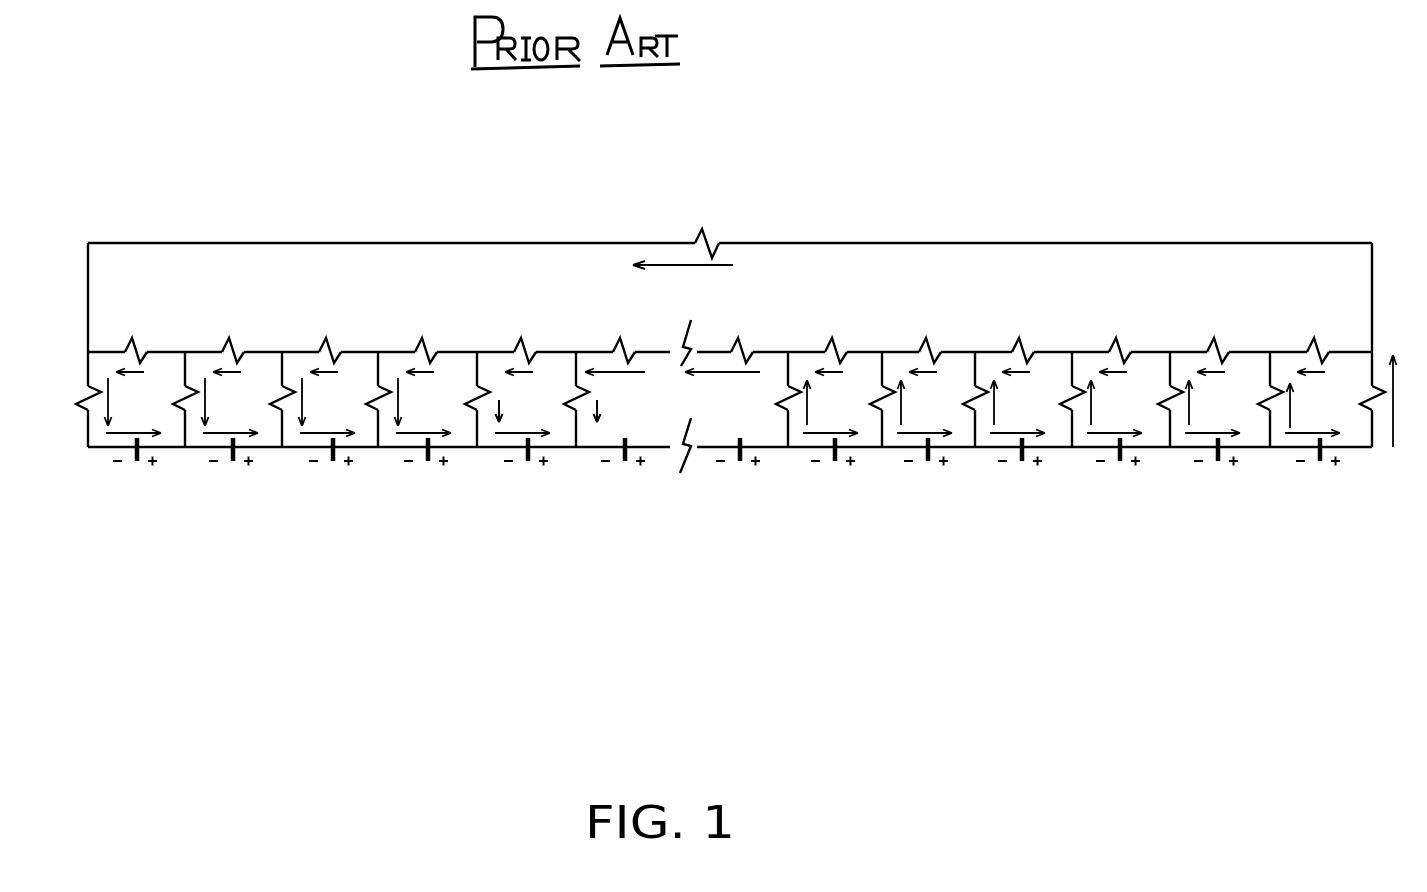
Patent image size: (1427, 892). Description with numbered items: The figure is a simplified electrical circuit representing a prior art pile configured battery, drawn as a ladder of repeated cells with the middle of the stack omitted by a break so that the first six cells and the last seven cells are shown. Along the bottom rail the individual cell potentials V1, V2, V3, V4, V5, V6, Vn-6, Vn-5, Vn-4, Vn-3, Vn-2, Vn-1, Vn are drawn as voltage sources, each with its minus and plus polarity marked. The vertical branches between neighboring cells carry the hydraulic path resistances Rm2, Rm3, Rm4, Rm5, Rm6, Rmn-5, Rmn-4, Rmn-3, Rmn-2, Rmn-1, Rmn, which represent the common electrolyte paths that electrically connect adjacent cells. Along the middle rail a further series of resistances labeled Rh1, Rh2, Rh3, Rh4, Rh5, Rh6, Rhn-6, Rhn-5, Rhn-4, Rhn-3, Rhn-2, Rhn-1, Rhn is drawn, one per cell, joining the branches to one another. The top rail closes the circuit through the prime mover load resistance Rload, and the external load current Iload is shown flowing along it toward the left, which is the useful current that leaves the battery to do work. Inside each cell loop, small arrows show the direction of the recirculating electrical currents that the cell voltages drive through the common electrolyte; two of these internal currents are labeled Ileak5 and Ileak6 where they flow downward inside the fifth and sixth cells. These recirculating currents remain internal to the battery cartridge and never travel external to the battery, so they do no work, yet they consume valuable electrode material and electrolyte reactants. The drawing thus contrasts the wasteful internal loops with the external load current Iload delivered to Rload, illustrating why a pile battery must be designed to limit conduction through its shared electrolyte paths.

The prime mover load resistance Rload is at (715, 228).
The external load current Iload is at (715, 270).
The heater resistor 1 Rh1 is at (139, 339).
The heater resistor 2 Rh2 is at (236, 339).
The heater resistor 3 Rh3 is at (333, 339).
The heater resistor 4 Rh4 is at (429, 339).
The heater resistor 5 Rh5 is at (528, 339).
The heater resistor 6 Rh6 is at (627, 339).
The heater resistor n-6 Rhn-6 is at (748, 337).
The heater resistor n-5 Rhn-5 is at (839, 337).
The heater resistor n-4 Rhn-4 is at (933, 337).
The heater resistor n-3 Rhn-3 is at (1026, 337).
The heater resistor n-2 Rhn-2 is at (1123, 337).
The heater resistor n-1 Rhn-1 is at (1221, 337).
The heater resistor n Rhn is at (1317, 337).
The hydraulic path resistance Rm2 is at (162, 401).
The hydraulic path resistance Rm3 is at (259, 402).
The hydraulic path resistance Rm4 is at (355, 401).
The hydraulic path resistance Rm5 is at (453, 401).
The hydraulic path resistance Rm6 is at (553, 400).
The hydraulic path resistance Rmn-5 is at (765, 405).
The hydraulic path resistance Rmn-4 is at (859, 405).
The hydraulic path resistance Rmn-3 is at (952, 405).
The hydraulic path resistance Rmn-2 is at (1049, 405).
The hydraulic path resistance Rmn-1 is at (1147, 405).
The hydraulic path resistance Rmn is at (1247, 405).
The leakage current 5 Ileak5 is at (528, 401).
The leakage current 6 Ileak6 is at (618, 404).
The individual cell potential V1 is at (135, 468).
The individual cell potential V2 is at (231, 468).
The individual cell potential V3 is at (331, 468).
The individual cell potential V4 is at (426, 468).
The individual cell potential V5 is at (526, 468).
The individual cell potential V6 is at (623, 468).
The individual cell potential Vn-6 is at (738, 468).
The individual cell potential Vn-5 is at (833, 468).
The individual cell potential Vn-4 is at (926, 468).
The individual cell potential Vn-3 is at (1020, 468).
The individual cell potential Vn-2 is at (1118, 468).
The individual cell potential Vn-1 is at (1216, 468).
The individual cell potential Vn is at (1318, 468).